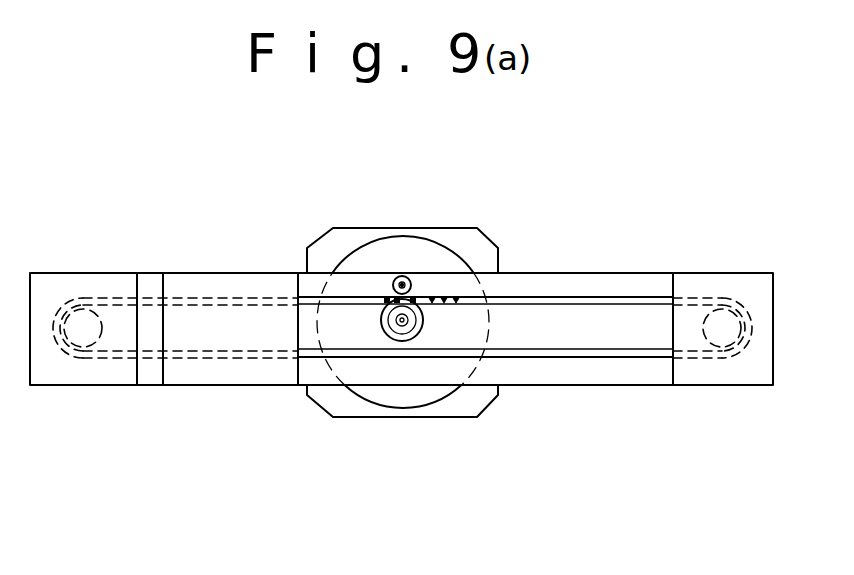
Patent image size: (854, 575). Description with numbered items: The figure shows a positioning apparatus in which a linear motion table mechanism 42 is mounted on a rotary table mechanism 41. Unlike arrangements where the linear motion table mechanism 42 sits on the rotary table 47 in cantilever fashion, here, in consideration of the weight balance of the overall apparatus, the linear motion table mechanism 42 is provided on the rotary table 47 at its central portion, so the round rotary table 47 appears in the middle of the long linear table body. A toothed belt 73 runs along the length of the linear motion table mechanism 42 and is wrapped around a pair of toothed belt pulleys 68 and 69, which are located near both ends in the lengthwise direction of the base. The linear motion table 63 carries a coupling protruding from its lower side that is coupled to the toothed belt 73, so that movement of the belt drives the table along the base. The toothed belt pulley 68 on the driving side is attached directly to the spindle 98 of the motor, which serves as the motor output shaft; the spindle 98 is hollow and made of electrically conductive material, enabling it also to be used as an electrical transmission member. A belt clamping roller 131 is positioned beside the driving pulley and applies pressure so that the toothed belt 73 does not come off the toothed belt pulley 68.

The rotary table mechanism 41 is at (443, 220).
The linear motion table mechanism 42 is at (742, 258).
The rotary table 47 is at (442, 262).
The linear motion table 63 is at (215, 283).
The toothed belt pulley 68 is at (396, 322).
The toothed belt pulley 69 is at (81, 340).
The toothed belt 73 is at (586, 297).
The spindle 98 is at (386, 293).
The belt clamping roller 131 is at (397, 275).